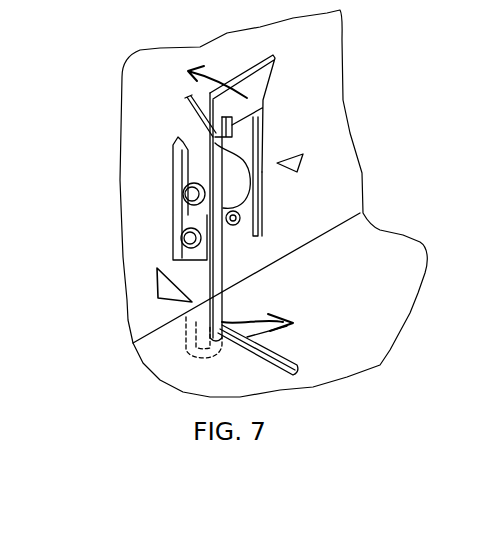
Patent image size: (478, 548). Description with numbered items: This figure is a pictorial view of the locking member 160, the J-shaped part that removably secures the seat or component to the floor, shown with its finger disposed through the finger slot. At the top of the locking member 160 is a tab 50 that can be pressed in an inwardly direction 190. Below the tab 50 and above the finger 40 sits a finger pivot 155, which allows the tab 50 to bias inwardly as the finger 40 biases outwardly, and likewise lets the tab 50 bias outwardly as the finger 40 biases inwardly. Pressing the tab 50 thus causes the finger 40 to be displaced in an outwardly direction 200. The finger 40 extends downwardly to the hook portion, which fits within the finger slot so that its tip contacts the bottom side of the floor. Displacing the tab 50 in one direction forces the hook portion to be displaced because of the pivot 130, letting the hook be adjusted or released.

The inwardly direction 190 is at (215, 88).
The tab 50 is at (255, 86).
The finger pivot 155 is at (193, 196).
The finger 40 is at (222, 305).
The pivot 130 is at (287, 365).
The locking member 160 is at (303, 163).
The outwardly direction 200 is at (157, 270).